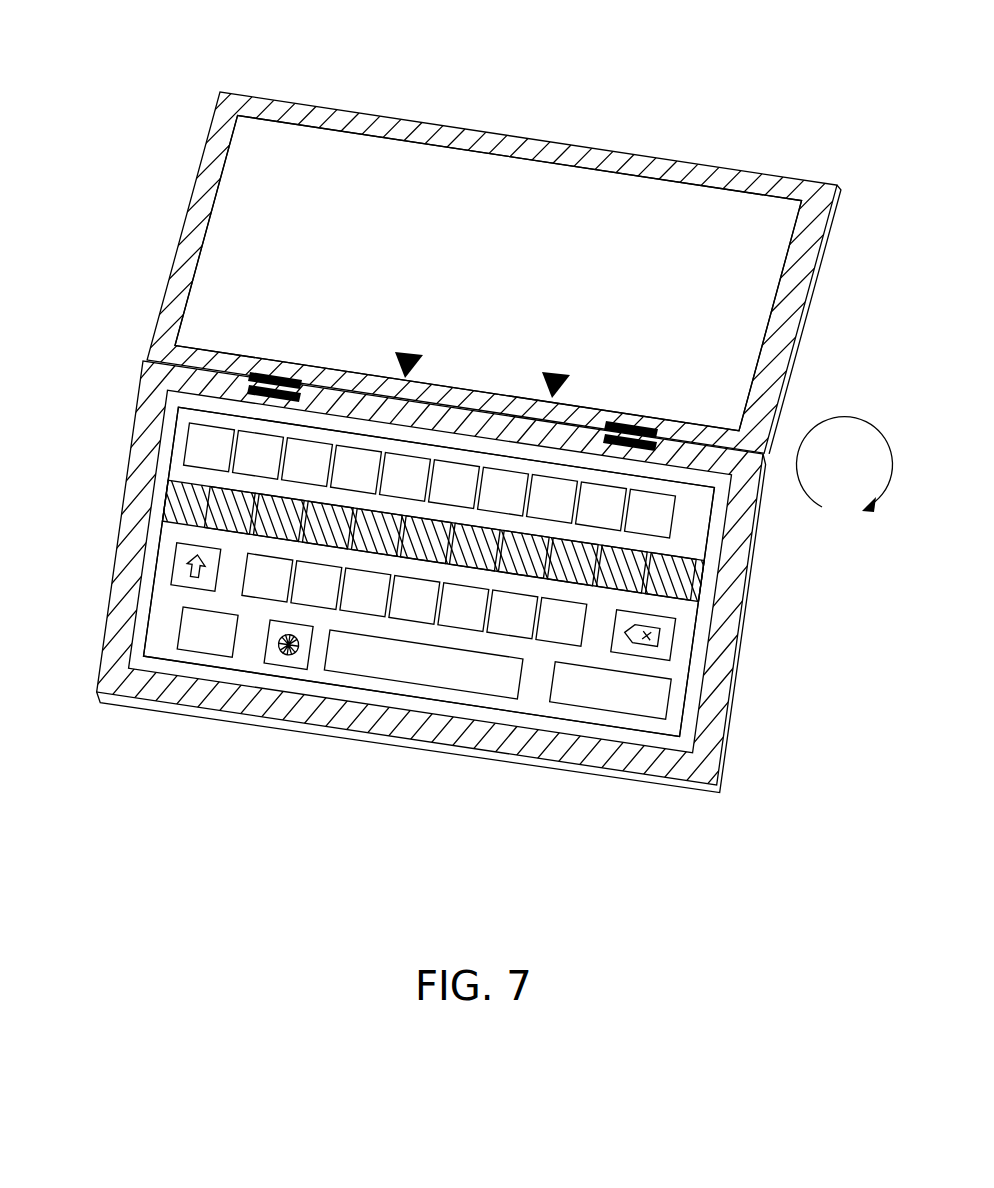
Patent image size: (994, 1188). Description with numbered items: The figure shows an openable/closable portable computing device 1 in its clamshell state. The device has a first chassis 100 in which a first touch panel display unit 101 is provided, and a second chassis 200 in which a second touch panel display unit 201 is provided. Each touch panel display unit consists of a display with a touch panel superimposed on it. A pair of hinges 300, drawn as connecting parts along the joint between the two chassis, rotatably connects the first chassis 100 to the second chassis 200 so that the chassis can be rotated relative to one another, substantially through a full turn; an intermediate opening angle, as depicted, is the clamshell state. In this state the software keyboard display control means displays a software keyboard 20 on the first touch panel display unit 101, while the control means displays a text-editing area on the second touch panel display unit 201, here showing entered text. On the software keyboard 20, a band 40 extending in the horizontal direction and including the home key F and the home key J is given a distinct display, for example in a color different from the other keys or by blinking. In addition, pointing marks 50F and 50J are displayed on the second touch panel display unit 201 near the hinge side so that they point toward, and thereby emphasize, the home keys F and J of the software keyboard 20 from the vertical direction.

The portable computing device 1 is at (486, 96).
The second chassis 200 is at (727, 180).
The second touch panel display unit 201 is at (528, 198).
The hinges 300 is at (278, 378).
The pointing mark 50F is at (405, 350).
The pointing mark 50J is at (552, 372).
The first chassis 100 is at (730, 587).
The first touch panel display unit 101 is at (232, 676).
The software keyboard 20 is at (426, 618).
The band 40 is at (430, 542).